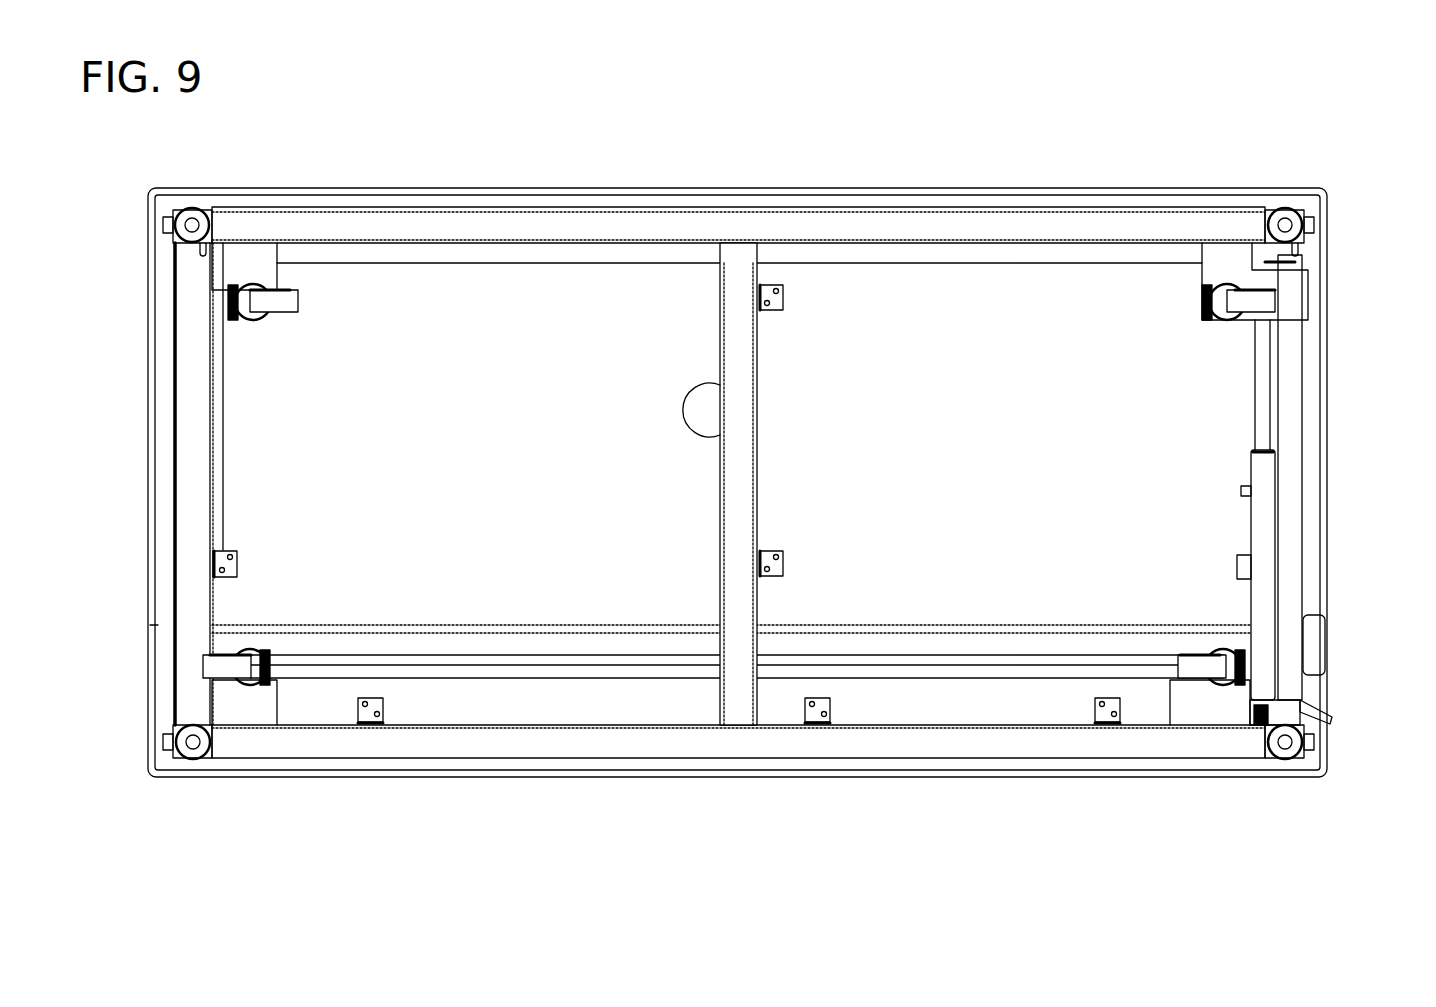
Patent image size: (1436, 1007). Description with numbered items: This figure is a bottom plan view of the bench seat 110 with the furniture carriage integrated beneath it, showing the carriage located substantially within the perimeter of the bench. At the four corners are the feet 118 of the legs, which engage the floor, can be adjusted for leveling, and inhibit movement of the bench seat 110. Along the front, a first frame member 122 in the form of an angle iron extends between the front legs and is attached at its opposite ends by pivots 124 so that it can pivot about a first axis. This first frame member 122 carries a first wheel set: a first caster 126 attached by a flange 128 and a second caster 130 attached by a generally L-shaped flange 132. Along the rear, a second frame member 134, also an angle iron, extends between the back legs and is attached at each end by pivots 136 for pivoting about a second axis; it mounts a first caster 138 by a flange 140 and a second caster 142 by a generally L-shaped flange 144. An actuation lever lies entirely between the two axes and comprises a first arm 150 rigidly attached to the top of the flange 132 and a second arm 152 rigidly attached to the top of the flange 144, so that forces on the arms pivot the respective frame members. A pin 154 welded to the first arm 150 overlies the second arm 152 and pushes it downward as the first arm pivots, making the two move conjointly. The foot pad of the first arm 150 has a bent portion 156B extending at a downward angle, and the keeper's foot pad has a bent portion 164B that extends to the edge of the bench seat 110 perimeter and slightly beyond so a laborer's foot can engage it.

The bench seat 110 is at (922, 186).
The feet 118 is at (188, 213).
The first frame member 122 is at (750, 208).
The pivots 124 is at (165, 228).
The first caster 126 is at (298, 312).
The flange 128 is at (250, 255).
The second caster 130 is at (1228, 315).
The flange 132 is at (1228, 255).
The second frame member 134 is at (610, 760).
The pivots 136 is at (165, 742).
The first caster 138 is at (235, 650).
The flange 140 is at (250, 710).
The second caster 142 is at (1190, 650).
The flange 144 is at (1222, 710).
The first arm 150 is at (1310, 575).
The second arm 152 is at (1262, 470).
The pin 154 is at (1242, 490).
The bent portion 156B is at (1320, 645).
The bent portion 164B is at (1320, 702).